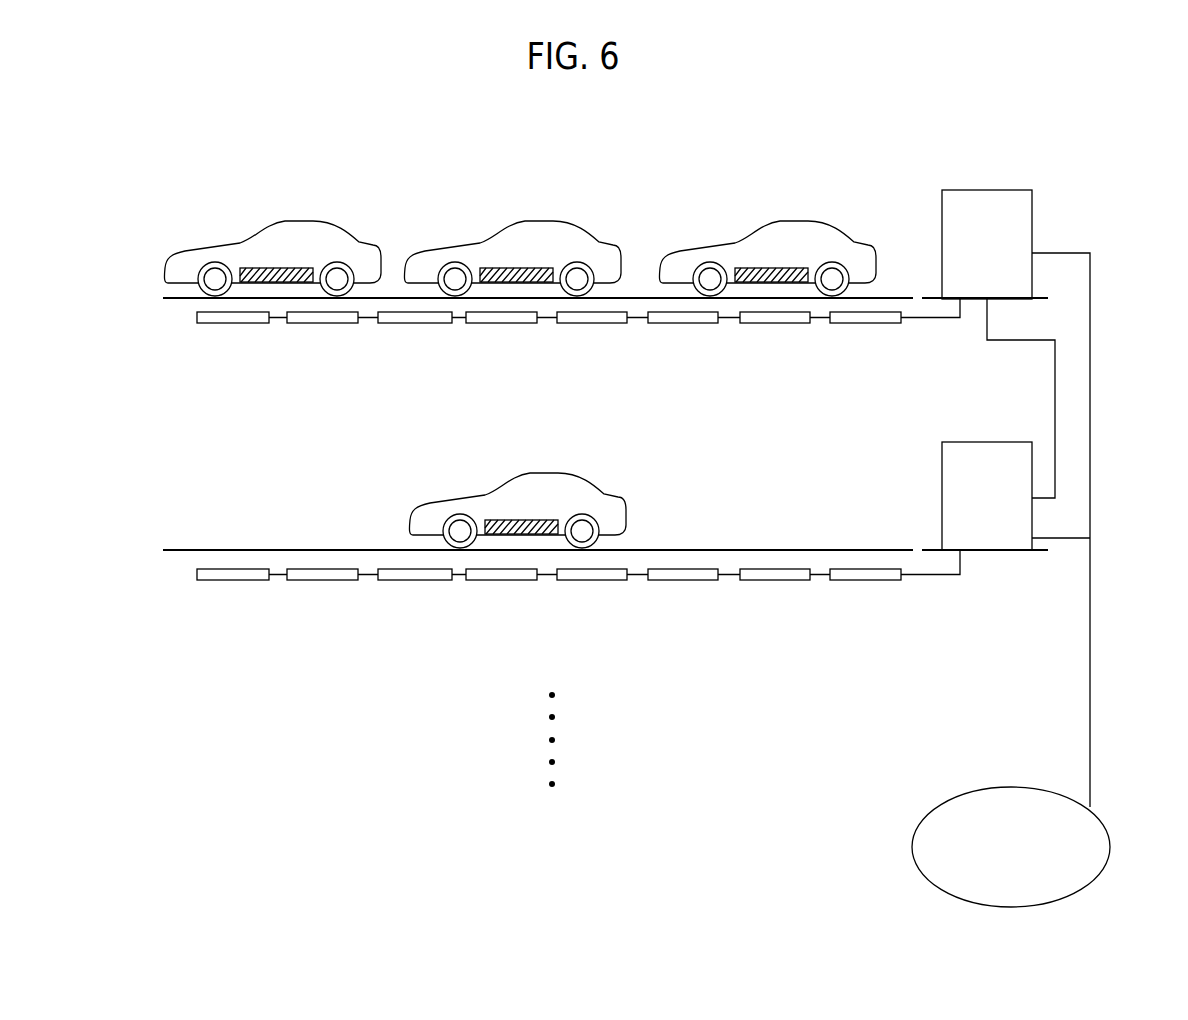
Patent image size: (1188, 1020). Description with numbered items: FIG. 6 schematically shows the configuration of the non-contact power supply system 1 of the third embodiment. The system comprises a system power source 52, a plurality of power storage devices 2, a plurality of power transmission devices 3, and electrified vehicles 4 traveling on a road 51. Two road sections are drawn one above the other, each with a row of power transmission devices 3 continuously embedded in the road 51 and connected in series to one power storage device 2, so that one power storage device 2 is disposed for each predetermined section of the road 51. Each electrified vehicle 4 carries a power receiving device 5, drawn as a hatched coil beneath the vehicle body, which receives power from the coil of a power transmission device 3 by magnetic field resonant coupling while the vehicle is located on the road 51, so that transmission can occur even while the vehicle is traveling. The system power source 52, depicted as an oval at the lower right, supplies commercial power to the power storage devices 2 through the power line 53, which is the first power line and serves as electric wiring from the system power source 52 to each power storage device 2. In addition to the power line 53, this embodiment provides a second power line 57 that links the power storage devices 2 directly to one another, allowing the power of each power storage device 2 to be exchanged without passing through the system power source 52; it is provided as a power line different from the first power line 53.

The non-contact power supply system 1 is at (240, 744).
The power storage device 2 is at (960, 189).
The power transmission device 3 is at (421, 324).
The electrified vehicle 4 is at (598, 234).
The power receiving device 5 is at (264, 268).
The road 51 is at (885, 297).
The system power source 52 is at (1102, 818).
The power line 53 is at (1090, 665).
The second power line 57 is at (986, 330).